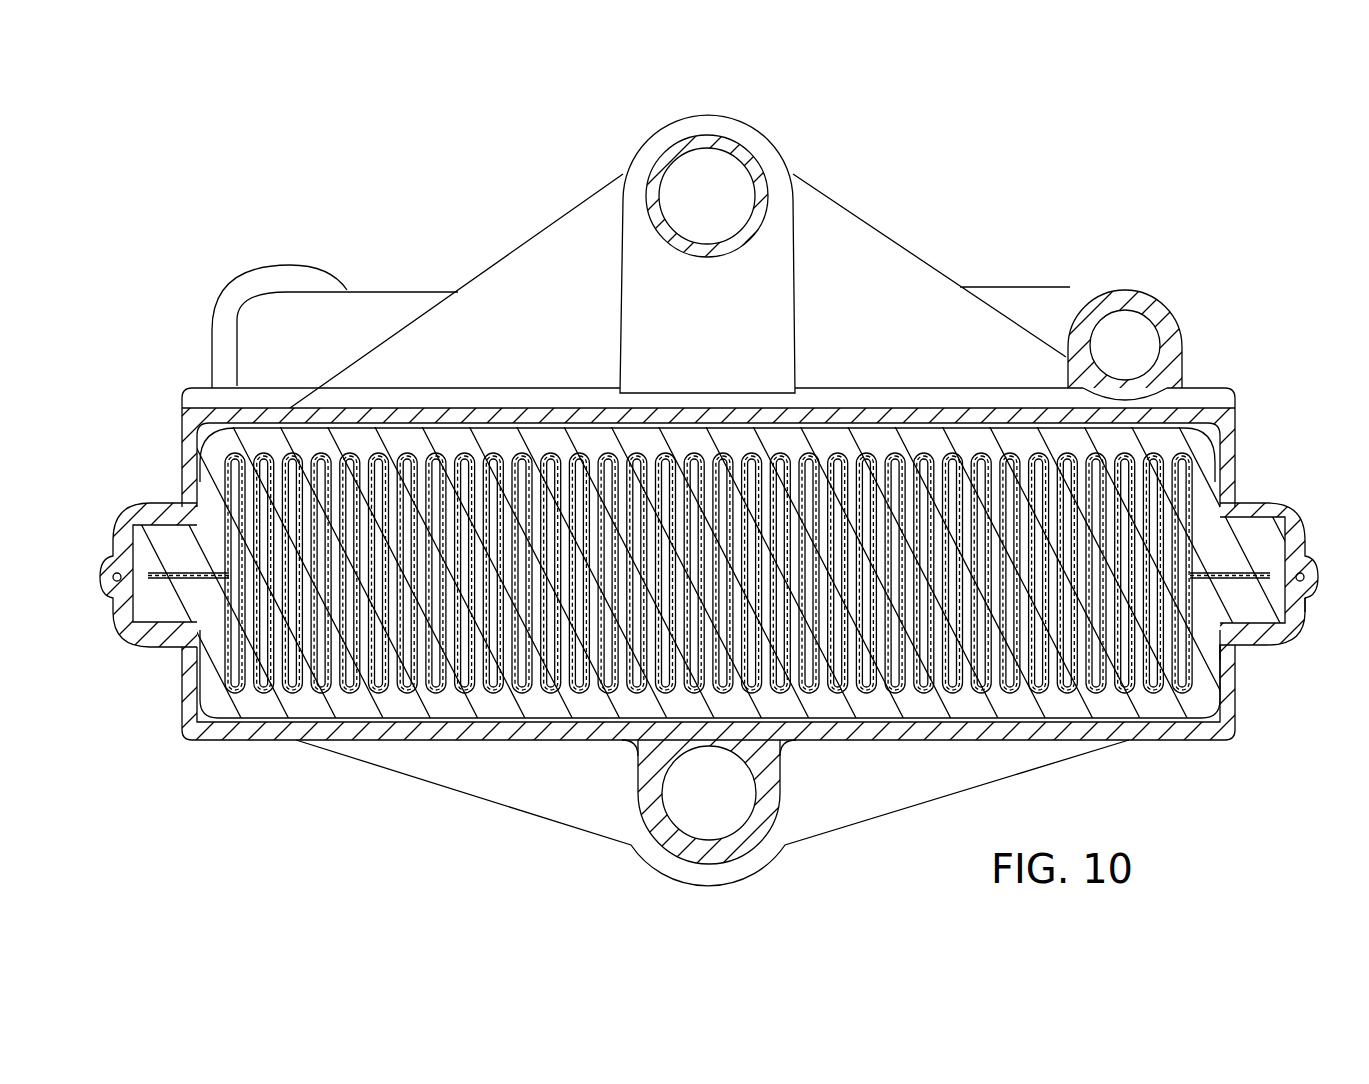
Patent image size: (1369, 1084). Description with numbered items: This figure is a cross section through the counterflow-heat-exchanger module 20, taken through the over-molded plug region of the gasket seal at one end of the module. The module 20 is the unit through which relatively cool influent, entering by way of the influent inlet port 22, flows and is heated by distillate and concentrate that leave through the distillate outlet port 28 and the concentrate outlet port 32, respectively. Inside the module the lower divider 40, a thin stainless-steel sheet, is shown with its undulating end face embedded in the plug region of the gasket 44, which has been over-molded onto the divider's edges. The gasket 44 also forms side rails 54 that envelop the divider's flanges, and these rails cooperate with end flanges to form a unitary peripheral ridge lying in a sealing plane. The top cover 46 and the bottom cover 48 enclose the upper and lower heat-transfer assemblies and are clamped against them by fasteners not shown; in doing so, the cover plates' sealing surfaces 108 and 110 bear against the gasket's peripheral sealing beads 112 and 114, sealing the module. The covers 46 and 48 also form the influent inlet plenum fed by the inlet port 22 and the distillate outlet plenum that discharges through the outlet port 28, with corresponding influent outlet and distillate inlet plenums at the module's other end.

The counterflow-heat-exchanger module 20 is at (994, 153).
The influent inlet port 22 is at (710, 136).
The distillate outlet port 28 is at (779, 787).
The concentrate outlet port 32 is at (1182, 328).
The lower divider 40 is at (228, 467).
The gasket 44 is at (215, 664).
The top cover 46 is at (182, 416).
The bottom cover 48 is at (205, 742).
The side rails 54 is at (145, 545).
The sealing surface 108 is at (1288, 538).
The sealing surface 110 is at (1290, 620).
The peripheral sealing bead 112 is at (1248, 510).
The peripheral sealing bead 114 is at (1245, 632).